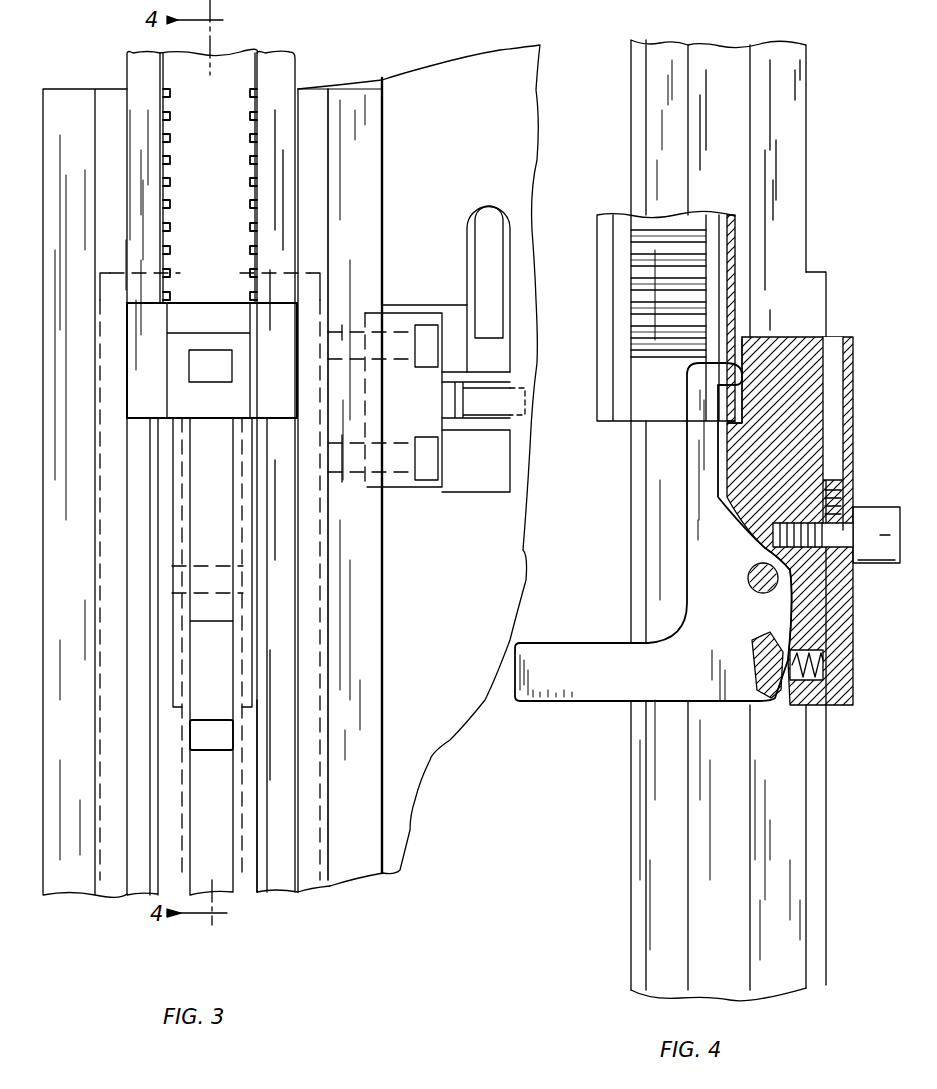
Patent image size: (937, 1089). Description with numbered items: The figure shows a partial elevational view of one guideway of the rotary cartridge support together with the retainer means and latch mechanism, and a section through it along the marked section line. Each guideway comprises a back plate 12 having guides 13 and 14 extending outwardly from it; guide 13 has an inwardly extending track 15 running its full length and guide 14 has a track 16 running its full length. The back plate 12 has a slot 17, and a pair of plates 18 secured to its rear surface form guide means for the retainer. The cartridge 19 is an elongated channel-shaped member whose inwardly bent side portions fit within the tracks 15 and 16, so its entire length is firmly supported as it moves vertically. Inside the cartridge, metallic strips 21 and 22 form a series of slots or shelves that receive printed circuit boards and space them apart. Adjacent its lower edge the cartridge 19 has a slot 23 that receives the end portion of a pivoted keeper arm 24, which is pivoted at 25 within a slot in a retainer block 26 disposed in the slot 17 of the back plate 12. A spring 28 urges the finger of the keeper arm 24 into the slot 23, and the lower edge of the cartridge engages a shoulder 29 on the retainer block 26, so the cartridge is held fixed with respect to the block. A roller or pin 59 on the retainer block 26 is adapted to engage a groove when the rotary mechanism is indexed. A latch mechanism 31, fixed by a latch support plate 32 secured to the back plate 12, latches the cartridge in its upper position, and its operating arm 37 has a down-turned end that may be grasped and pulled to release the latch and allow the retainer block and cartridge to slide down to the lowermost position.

In FIG. 3, the back plate 12 is at (258, 882).
In FIG. 3, the guide 13 is at (315, 880).
In FIG. 3, the guide 14 is at (115, 883).
In FIG. 4, the guide 14 is at (718, 63).
In FIG. 3, the track 15 is at (285, 882).
In FIG. 3, the track 16 is at (147, 885).
In FIG. 4, the track 16 is at (670, 68).
In FIG. 3, the slot 17 is at (236, 770).
In FIG. 4, the plates 18 is at (814, 292).
In FIG. 3, the cartridge 19 is at (300, 47).
In FIG. 4, the cartridge 19 is at (603, 222).
In FIG. 3, the metallic strip 21 is at (252, 155).
In FIG. 3, the metallic strip 22 is at (170, 247).
In FIG. 4, the slot 23 is at (757, 340).
In FIG. 3, the keeper arm 24 is at (215, 655).
In FIG. 4, the keeper arm 24 is at (594, 681).
In FIG. 4, the pivot 25 is at (780, 577).
In FIG. 4, the retainer block 26 is at (835, 618).
In FIG. 4, the spring 28 is at (835, 707).
In FIG. 4, the shoulder 29 is at (728, 426).
In FIG. 3, the latch mechanism 31 is at (487, 284).
In FIG. 3, the latch support plate 32 is at (425, 427).
In FIG. 3, the operating arm 37 is at (492, 316).
In FIG. 4, the roller or pin 59 is at (870, 520).